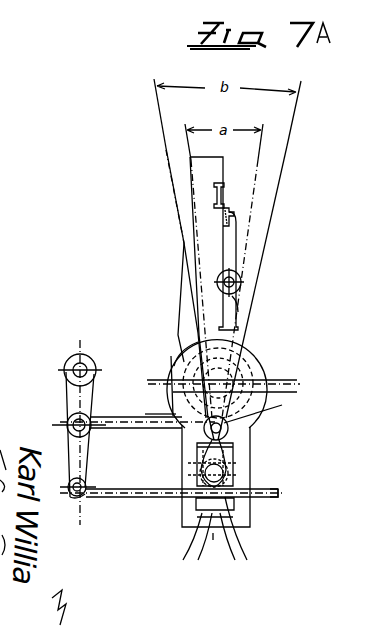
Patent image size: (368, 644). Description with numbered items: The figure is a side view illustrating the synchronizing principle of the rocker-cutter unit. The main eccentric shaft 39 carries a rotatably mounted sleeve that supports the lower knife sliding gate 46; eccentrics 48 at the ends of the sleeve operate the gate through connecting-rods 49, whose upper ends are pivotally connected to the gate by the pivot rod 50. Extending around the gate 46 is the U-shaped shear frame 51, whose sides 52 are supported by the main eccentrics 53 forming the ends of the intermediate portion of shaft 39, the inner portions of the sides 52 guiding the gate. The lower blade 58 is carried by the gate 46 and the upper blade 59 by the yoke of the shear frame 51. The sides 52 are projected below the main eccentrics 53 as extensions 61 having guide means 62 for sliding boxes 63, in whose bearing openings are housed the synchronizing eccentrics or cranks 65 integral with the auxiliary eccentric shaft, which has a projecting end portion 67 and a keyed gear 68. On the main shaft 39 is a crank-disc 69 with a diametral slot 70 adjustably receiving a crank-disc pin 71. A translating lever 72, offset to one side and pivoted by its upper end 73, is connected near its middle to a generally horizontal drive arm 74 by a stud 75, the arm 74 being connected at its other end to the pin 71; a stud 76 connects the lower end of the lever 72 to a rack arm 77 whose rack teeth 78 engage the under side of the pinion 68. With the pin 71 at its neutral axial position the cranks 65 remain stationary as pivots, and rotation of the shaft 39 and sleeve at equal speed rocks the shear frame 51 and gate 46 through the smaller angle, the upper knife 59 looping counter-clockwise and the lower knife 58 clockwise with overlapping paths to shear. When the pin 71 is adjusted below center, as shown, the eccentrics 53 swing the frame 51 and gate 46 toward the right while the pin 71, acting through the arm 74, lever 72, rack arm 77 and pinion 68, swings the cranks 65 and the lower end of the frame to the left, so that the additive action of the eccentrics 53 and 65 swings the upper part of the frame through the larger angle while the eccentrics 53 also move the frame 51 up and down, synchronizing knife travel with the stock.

The main eccentric shaft 39 is at (197, 363).
The lower knife sliding gate 46 is at (240, 240).
The eccentrics 48 is at (234, 366).
The connecting-rods 49 is at (233, 300).
The pivot rod 50 is at (234, 280).
The shear frame 51 is at (178, 322).
The sides 52 is at (179, 261).
The main eccentrics 53 is at (282, 405).
The lower blade 58 is at (232, 218).
The upper blade 59 is at (222, 193).
The extensions 61 is at (242, 526).
The guide means 62 is at (230, 452).
The sliding boxes 63 is at (197, 544).
The cranks 65 is at (238, 536).
The projecting end portion 67 is at (236, 480).
The gear 68 is at (198, 471).
The crank-disc 69 is at (267, 369).
The diametral slot 70 is at (218, 346).
The crank-disc pin 71 is at (227, 426).
The translating lever 72 is at (64, 385).
The upper end 73 is at (97, 362).
The drive arm 74 is at (133, 417).
The stud 75 is at (68, 428).
The stud 76 is at (73, 497).
The rack arm 77 is at (139, 498).
The rack teeth 78 is at (268, 493).